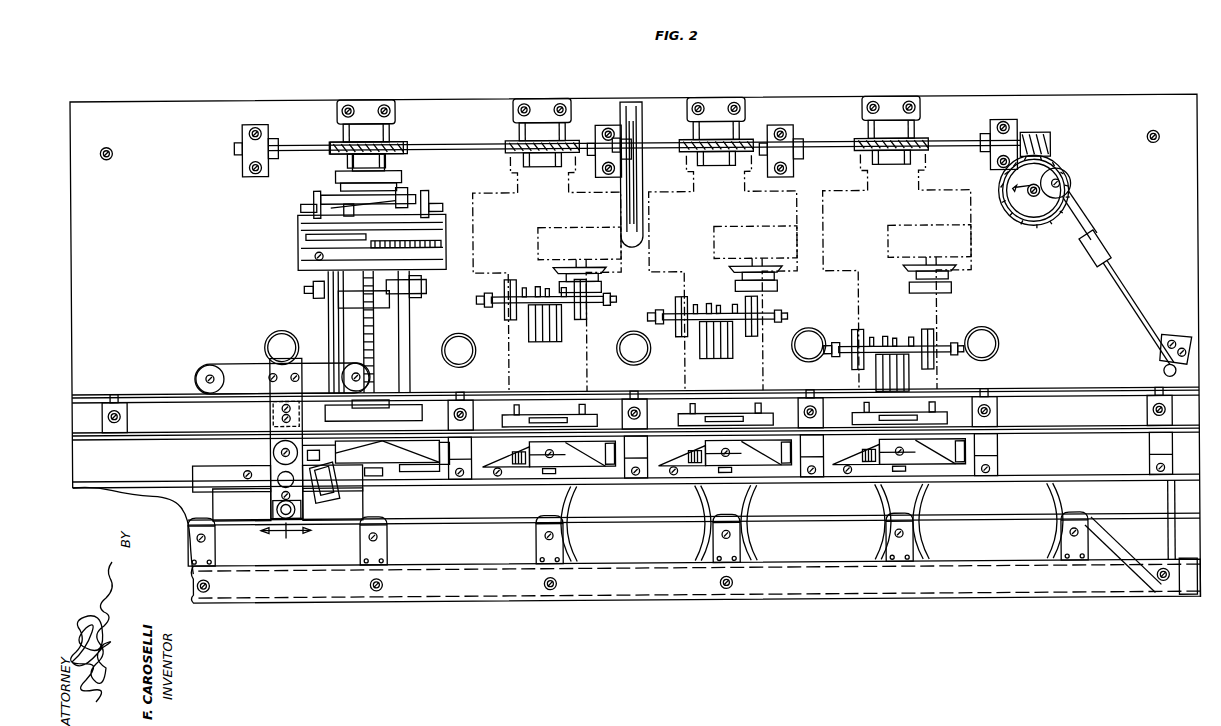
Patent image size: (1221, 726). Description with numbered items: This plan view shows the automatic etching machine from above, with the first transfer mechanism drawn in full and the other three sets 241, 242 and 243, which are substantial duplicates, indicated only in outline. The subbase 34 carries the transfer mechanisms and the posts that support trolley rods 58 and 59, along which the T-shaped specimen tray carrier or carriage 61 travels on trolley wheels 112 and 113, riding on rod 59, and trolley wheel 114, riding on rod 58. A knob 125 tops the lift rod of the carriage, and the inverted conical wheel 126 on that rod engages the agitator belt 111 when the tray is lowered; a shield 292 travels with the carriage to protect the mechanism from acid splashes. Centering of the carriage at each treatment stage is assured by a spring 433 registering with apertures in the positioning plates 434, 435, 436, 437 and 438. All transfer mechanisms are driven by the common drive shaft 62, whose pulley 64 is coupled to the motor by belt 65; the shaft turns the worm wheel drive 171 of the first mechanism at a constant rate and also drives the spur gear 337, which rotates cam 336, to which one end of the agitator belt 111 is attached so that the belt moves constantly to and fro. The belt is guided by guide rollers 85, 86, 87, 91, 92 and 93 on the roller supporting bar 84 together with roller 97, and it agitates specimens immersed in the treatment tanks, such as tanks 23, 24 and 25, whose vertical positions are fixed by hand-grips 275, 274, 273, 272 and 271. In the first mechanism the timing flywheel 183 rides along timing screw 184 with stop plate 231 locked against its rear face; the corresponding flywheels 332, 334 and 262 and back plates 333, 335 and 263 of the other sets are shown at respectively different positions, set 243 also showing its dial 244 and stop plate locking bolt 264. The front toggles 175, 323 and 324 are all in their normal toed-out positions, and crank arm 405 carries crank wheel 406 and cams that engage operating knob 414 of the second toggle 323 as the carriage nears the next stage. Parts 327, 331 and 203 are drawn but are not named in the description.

The subbase 34 is at (158, 102).
The trolley rod 59 is at (155, 396).
The trolley rod 58 is at (150, 441).
The drive shaft 62 is at (823, 146).
The worm wheel drive 171 is at (398, 145).
The pulley 64 is at (638, 110).
The belt 65 is at (630, 108).
The spur gear 337 is at (1022, 215).
The cam 336 is at (1062, 184).
The roller 97 is at (1155, 365).
The transfer mechanism set 241 is at (559, 317).
The transfer mechanism set 242 is at (735, 316).
The transfer mechanism set 243 is at (909, 315).
The mounting block 327 is at (602, 290).
The mounting block 331 is at (778, 289).
The dial 244 is at (952, 293).
The back plate 333 is at (524, 305).
The timing flywheel 332 is at (530, 324).
The back plate 335 is at (700, 318).
The timing flywheel 334 is at (710, 334).
The stop plate 263 is at (914, 345).
The stop plate locking bolt 264 is at (950, 348).
The timer flywheel 262 is at (928, 372).
The front toggle 323 is at (504, 470).
The front toggle 324 is at (658, 470).
The hand-grip 275 is at (275, 333).
The hand-grip 274 is at (460, 346).
The hand-grip 273 is at (628, 344).
The hand-grip 272 is at (806, 342).
The hand-grip 271 is at (988, 342).
The positioning plate 435 is at (470, 400).
The positioning plate 436 is at (648, 406).
The positioning plate 437 is at (822, 408).
The positioning plate 438 is at (996, 408).
The stop plate 231 is at (340, 292).
The clutch block 203 is at (427, 291).
The timing flywheel 183 is at (345, 309).
The timing screw 184 is at (376, 337).
The carriage 61 is at (248, 366).
The trolley wheel 112 is at (205, 368).
The trolley wheel 113 is at (346, 370).
The spring 433 is at (296, 384).
The trolley wheel 114 is at (268, 457).
The positioning plate 434 is at (268, 423).
The knob 125 is at (272, 512).
The wheel 126 is at (286, 539).
The shield 292 is at (318, 523).
The front toggle 175 is at (348, 478).
The crank arm 405 is at (405, 474).
The crank wheel 406 is at (376, 480).
The operating knob 414 is at (450, 484).
The agitator belt 111 is at (446, 527).
The roller supporting bar 84 is at (308, 602).
The guide roller 85 is at (212, 530).
The guide roller 86 is at (372, 532).
The guide roller 87 is at (536, 530).
The guide roller 91 is at (724, 524).
The guide roller 92 is at (898, 523).
The guide roller 93 is at (1076, 521).
The treatment tank 23 is at (700, 552).
The treatment tank 24 is at (875, 552).
The treatment tank 25 is at (1050, 552).